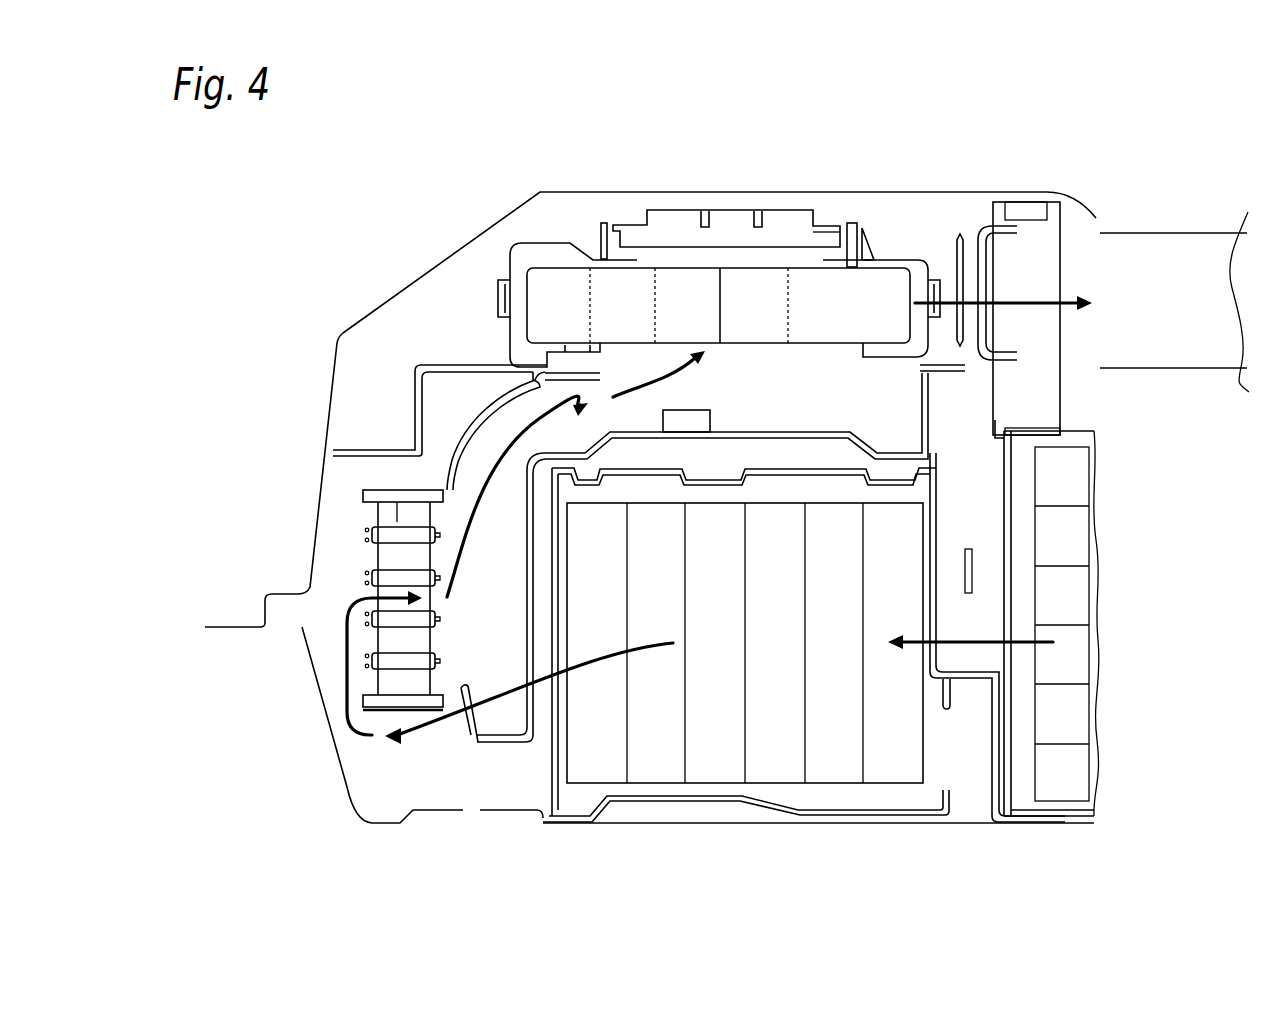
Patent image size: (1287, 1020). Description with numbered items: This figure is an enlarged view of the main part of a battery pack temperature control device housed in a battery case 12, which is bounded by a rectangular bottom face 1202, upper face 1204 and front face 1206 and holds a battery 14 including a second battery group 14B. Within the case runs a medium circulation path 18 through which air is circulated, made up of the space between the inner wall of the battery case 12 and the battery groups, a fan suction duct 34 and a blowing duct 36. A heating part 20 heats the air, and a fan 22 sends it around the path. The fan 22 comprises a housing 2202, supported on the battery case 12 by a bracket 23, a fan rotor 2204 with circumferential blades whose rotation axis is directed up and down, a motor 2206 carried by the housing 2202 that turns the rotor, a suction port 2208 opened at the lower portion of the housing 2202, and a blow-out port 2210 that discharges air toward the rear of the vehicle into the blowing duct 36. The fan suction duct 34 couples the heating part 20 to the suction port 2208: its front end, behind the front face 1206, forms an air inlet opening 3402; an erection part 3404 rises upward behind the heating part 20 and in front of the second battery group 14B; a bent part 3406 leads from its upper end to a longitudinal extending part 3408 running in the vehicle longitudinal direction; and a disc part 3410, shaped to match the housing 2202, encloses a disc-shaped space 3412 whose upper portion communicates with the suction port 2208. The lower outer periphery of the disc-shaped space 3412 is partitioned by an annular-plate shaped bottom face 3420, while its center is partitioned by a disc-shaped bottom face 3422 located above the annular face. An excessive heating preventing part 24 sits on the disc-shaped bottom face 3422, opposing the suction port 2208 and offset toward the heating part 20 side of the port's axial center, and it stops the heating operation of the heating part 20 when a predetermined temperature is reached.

The battery case 12 is at (399, 283).
The bottom face 1202 is at (972, 826).
The upper face 1204 is at (982, 193).
The front face 1206 is at (328, 412).
The battery 14 is at (804, 662).
The second battery group 14B is at (825, 795).
The medium circulation path 18 is at (1030, 284).
The heating part 20 is at (370, 582).
The fan 22 is at (680, 262).
The housing 2202 is at (512, 246).
The fan rotor 2204 is at (540, 253).
The motor 2206 is at (726, 242).
The suction port 2208 is at (800, 362).
The blow-out port 2210 is at (945, 264).
The bracket 23 is at (443, 366).
The excessive heating preventing part 24 is at (723, 408).
The fan suction duct 34 is at (457, 401).
The air inlet opening 3402 is at (397, 508).
The erection part 3404 is at (500, 557).
The bent part 3406 is at (527, 440).
The longitudinal extending part 3408 is at (497, 287).
The disc part 3410 is at (727, 373).
The disc-shaped space 3412 is at (841, 409).
The annular-plate shaped bottom face 3420 is at (568, 392).
The disc-shaped bottom face 3422 is at (643, 412).
The blowing duct 36 is at (1190, 232).